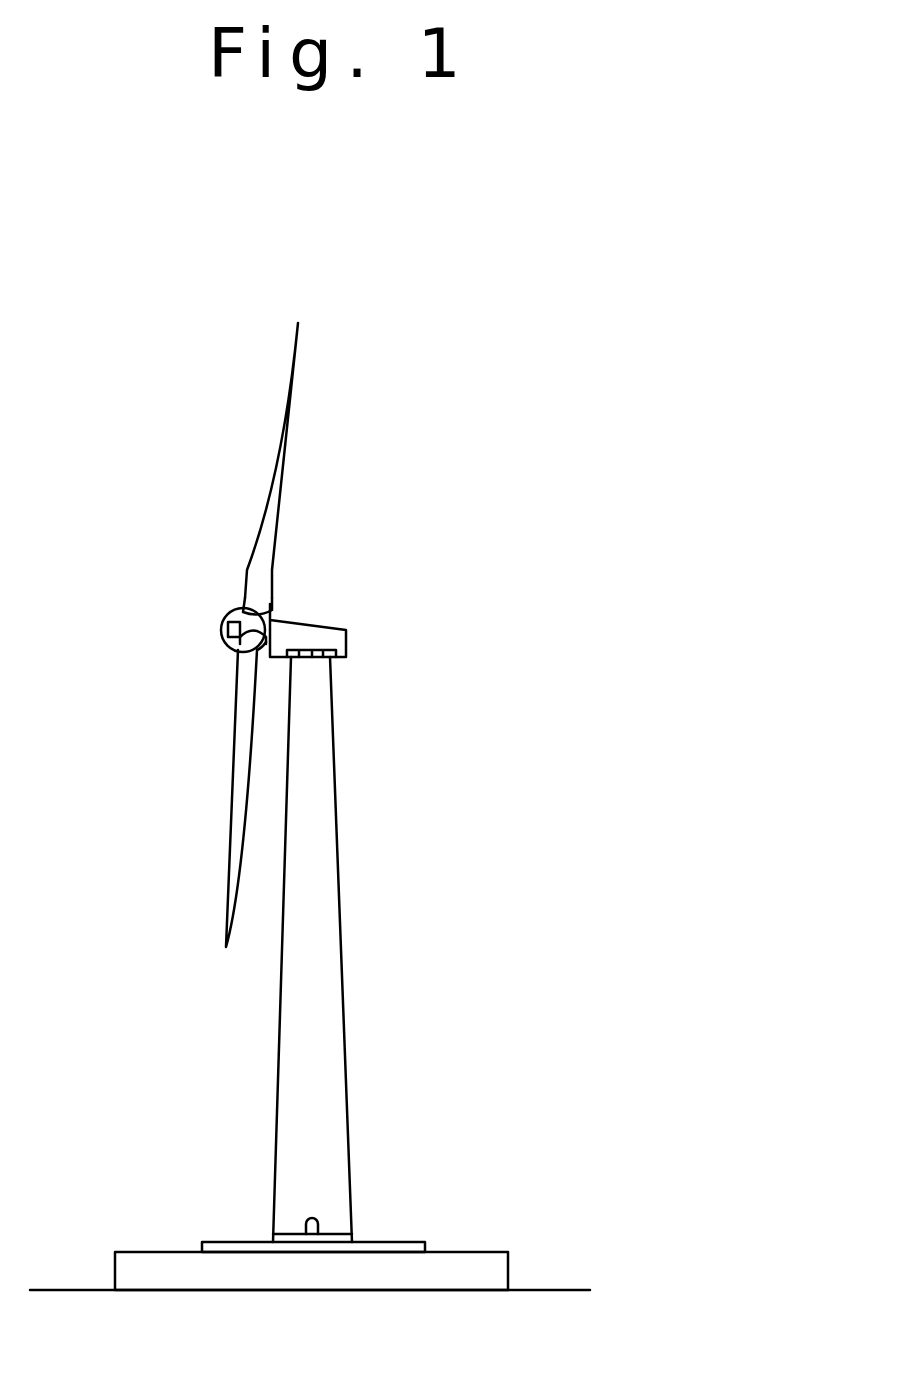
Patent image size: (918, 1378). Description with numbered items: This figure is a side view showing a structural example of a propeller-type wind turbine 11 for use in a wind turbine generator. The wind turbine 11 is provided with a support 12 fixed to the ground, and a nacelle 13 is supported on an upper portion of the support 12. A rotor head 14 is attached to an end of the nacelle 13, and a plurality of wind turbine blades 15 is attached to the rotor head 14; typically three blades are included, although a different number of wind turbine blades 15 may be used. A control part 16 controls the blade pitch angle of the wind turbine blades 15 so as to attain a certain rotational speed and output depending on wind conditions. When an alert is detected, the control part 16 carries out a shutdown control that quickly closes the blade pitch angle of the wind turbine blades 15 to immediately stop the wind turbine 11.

The wind turbine 11 is at (502, 328).
The support 12 is at (340, 898).
The nacelle 13 is at (315, 598).
The rotor head 14 is at (228, 612).
The wind turbine blade 15 is at (278, 463).
The control part 16 is at (232, 651).